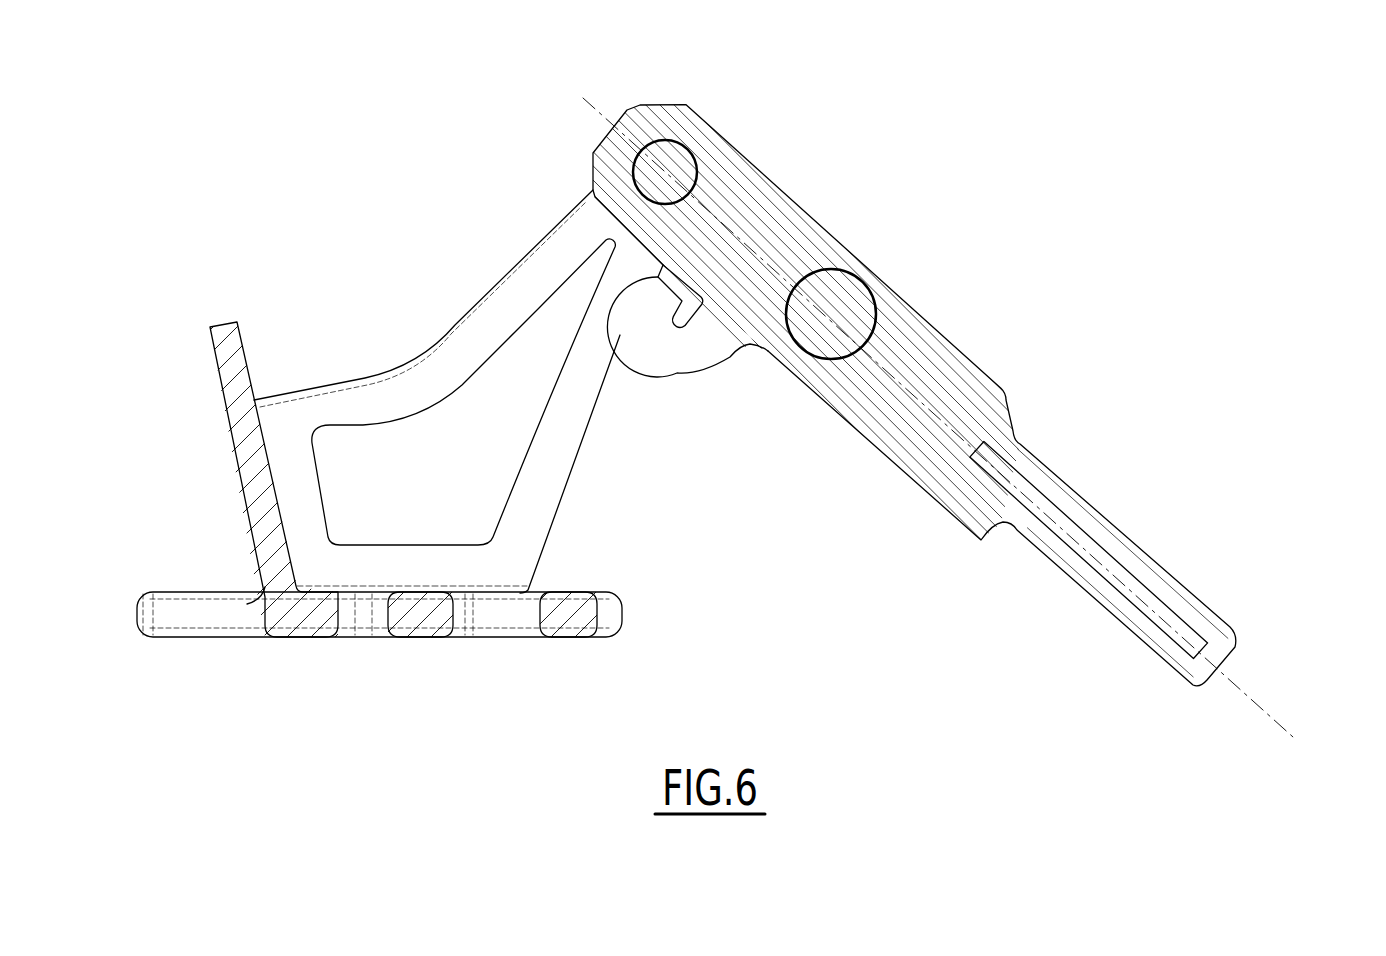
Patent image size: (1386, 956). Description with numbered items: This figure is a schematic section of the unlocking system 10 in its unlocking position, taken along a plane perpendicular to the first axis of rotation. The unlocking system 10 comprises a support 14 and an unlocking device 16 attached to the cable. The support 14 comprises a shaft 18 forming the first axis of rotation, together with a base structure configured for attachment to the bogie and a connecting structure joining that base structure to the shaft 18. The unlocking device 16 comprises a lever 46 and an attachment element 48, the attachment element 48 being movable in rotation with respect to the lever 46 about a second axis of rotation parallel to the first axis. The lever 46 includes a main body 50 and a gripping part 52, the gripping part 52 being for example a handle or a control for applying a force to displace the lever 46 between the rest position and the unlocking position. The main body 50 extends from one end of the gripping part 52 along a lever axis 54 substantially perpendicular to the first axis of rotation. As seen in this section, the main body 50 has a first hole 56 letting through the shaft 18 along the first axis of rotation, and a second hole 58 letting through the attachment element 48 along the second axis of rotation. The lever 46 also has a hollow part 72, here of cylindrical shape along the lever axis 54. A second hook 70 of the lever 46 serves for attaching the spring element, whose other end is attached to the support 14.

The unlocking system 10 is at (684, 394).
The support 14 is at (270, 638).
The unlocking device 16 is at (929, 393).
The shaft 18 is at (657, 165).
The lever 46 is at (962, 392).
The attachment element 48 is at (830, 300).
The main body 50 is at (752, 182).
The gripping part 52 is at (1150, 578).
The lever axis 54 is at (1280, 722).
The first hole 56 is at (697, 145).
The second hole 58 is at (869, 281).
The second hook 70 is at (672, 348).
The hollow part 72 is at (1062, 527).